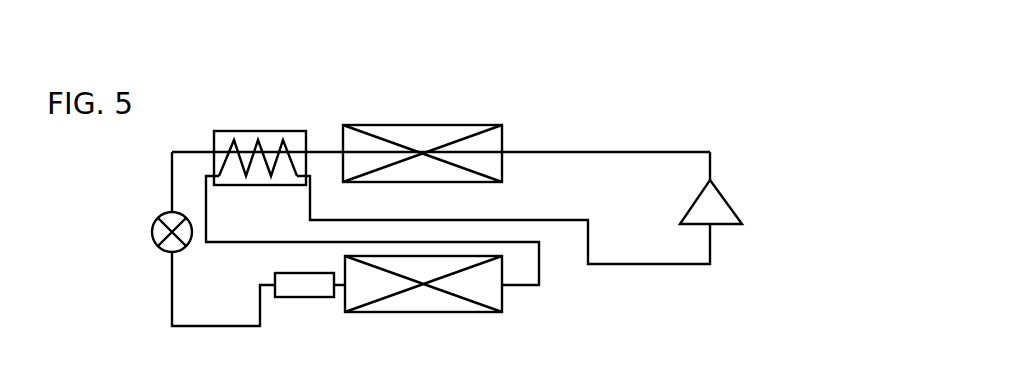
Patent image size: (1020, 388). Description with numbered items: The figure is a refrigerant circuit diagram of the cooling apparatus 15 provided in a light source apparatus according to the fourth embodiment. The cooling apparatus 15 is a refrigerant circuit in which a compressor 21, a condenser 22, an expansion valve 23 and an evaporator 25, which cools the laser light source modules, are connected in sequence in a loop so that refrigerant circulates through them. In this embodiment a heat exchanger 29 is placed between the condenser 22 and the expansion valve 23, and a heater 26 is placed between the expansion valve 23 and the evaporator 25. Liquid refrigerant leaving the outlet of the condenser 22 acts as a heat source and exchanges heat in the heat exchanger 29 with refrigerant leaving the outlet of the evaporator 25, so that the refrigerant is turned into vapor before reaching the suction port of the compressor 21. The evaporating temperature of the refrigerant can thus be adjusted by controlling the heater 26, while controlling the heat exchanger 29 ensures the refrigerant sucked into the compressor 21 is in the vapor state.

The cooling apparatus 15 is at (708, 95).
The compressor 21 is at (717, 210).
The condenser 22 is at (423, 143).
The expansion valve 23 is at (160, 236).
The evaporator 25 is at (426, 292).
The heater 26 is at (303, 288).
The heat exchanger 29 is at (268, 148).